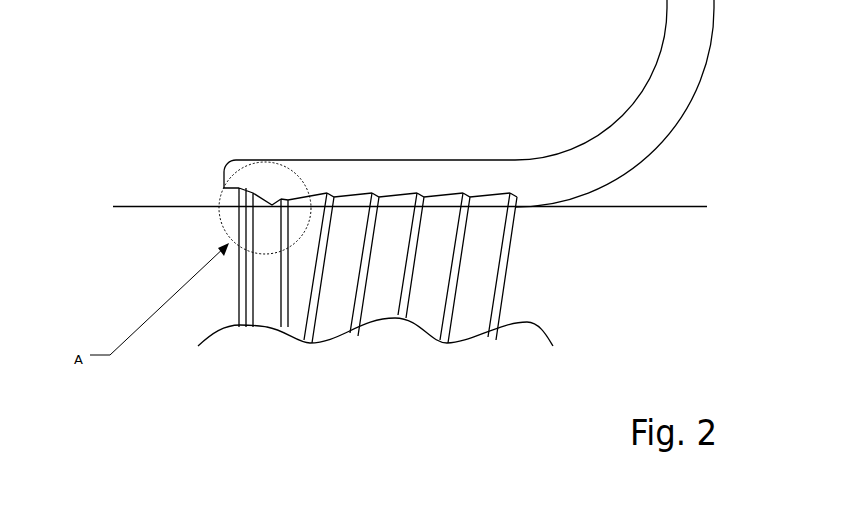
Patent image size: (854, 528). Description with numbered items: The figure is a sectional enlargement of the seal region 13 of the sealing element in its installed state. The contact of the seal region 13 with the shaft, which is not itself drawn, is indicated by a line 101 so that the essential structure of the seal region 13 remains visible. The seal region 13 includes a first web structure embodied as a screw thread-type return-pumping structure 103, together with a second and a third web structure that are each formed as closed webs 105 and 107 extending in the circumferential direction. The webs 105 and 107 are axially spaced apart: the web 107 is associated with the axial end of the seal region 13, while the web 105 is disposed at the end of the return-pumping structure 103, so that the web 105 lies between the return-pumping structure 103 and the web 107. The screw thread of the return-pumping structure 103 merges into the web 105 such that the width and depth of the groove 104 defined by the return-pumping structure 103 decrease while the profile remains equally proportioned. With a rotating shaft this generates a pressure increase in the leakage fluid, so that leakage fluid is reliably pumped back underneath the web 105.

The seal region 13 is at (365, 122).
The line 101 is at (668, 203).
The return-pumping structure 103 is at (510, 230).
The groove 104 is at (467, 318).
The web 105 is at (285, 300).
The web 107 is at (257, 308).